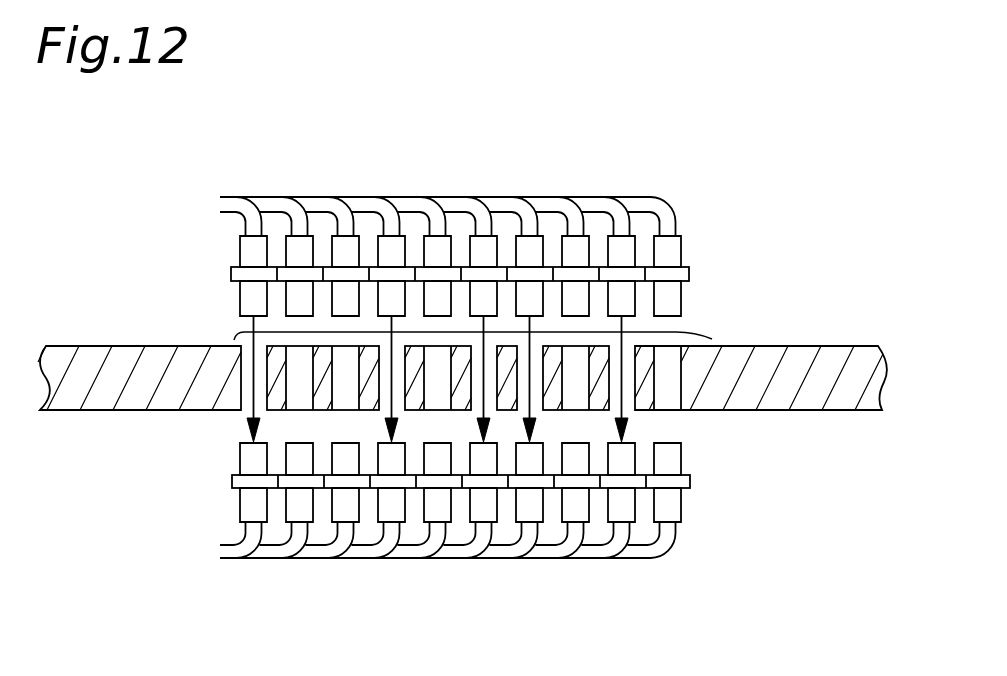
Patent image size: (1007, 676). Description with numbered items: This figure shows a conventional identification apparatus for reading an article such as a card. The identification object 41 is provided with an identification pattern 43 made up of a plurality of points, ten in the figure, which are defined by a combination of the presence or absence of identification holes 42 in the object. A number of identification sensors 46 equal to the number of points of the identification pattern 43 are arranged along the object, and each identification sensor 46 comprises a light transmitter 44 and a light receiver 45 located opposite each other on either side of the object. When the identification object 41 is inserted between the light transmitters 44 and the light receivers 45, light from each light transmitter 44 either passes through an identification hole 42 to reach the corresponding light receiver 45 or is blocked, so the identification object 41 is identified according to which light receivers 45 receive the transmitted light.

The identification object 41 is at (837, 346).
The identification holes 42 is at (242, 417).
The identification pattern 43 is at (677, 326).
The light transmitter 44 is at (680, 252).
The light receiver 45 is at (682, 498).
The identification sensors 46 is at (672, 183).